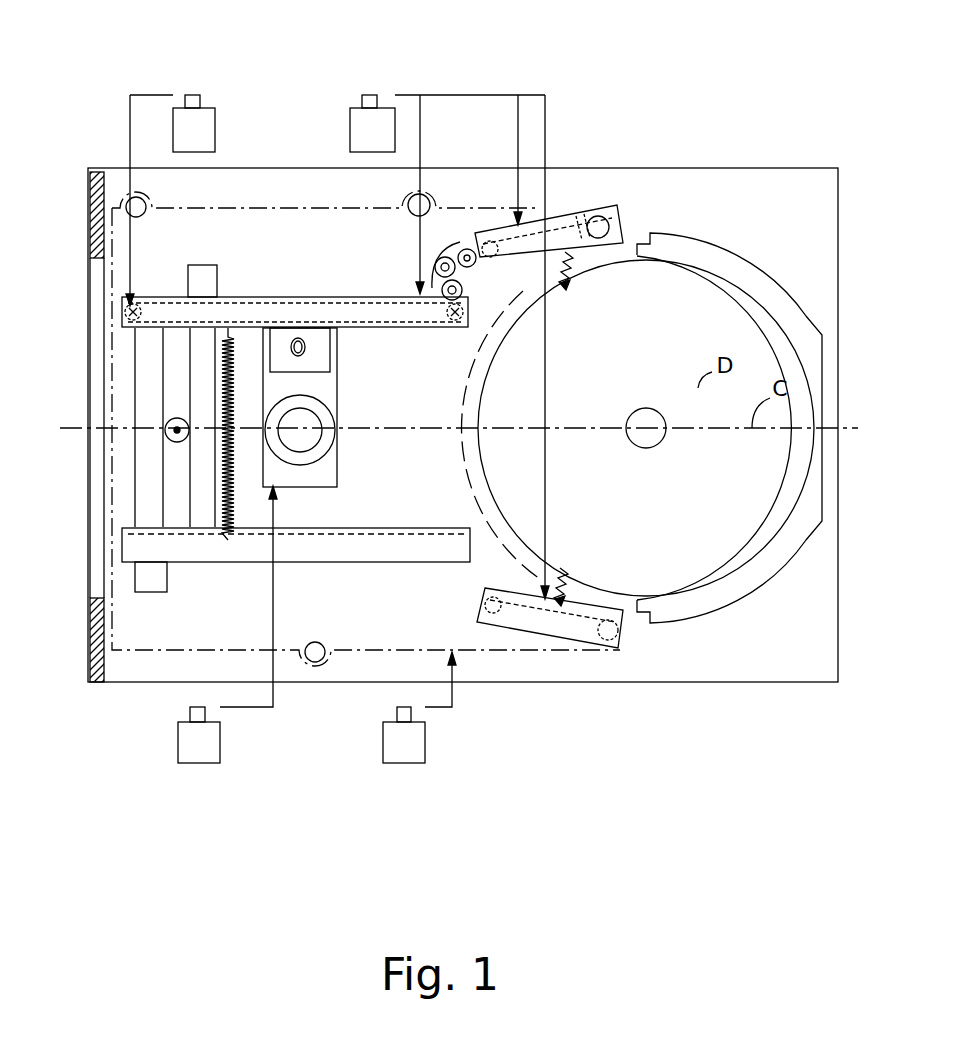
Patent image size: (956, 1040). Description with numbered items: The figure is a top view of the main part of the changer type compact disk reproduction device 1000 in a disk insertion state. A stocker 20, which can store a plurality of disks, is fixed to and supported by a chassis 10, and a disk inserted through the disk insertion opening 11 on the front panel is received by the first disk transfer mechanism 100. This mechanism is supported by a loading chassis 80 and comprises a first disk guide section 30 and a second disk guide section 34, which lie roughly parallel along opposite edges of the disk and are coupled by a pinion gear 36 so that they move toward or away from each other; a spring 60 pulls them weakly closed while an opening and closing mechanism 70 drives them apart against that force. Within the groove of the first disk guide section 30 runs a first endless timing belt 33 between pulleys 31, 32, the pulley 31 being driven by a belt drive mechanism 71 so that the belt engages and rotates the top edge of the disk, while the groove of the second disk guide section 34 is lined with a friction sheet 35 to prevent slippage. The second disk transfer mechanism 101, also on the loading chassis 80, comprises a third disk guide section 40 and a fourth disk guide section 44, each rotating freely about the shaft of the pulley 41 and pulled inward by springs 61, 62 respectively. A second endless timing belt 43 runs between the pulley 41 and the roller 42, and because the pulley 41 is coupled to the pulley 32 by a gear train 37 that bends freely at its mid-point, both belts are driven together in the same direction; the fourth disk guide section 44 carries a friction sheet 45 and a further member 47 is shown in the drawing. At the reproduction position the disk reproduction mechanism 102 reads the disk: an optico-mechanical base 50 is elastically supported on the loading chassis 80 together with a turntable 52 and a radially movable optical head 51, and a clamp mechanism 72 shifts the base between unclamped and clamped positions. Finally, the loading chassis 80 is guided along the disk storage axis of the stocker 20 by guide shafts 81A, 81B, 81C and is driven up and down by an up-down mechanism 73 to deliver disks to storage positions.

The changer type compact disk reproduction device 1000 is at (611, 124).
The chassis 10 is at (752, 180).
The disk insertion opening 11 is at (100, 584).
The stocker 20 is at (750, 276).
The first disk guide section 30 is at (175, 315).
The pulley 31 is at (157, 295).
The pulley 32 is at (444, 328).
The first endless timing belt 33 is at (388, 323).
The second disk guide section 34 is at (223, 553).
The friction sheet 35 is at (177, 545).
The pinion gear 36 is at (178, 413).
The gear train 37 is at (435, 258).
The third disk guide section 40 is at (522, 255).
The pulley 41 is at (493, 258).
The roller 42 is at (628, 208).
The second endless timing belt 43 is at (568, 212).
The fourth disk guide section 44 is at (596, 616).
The friction sheet 45 is at (512, 600).
The arm support 47 is at (486, 585).
The optico-mechanical base 50 is at (323, 387).
The optical head 51 is at (323, 353).
The turntable 52 is at (323, 443).
The spring 60 is at (228, 337).
The spring 61 is at (580, 288).
The spring 62 is at (582, 580).
The opening and closing mechanism 70 is at (358, 106).
The belt drive mechanism 71 is at (205, 125).
The clamp mechanism 72 is at (198, 750).
The up-down mechanism 73 is at (413, 750).
The loading chassis 80 is at (238, 222).
The guide shaft 81A is at (132, 203).
The guide shaft 81B is at (426, 200).
The guide shaft 81C is at (318, 663).
The first disk transfer mechanism 100 is at (333, 577).
The second disk transfer mechanism 101 is at (700, 468).
The disk reproduction mechanism 102 is at (388, 348).